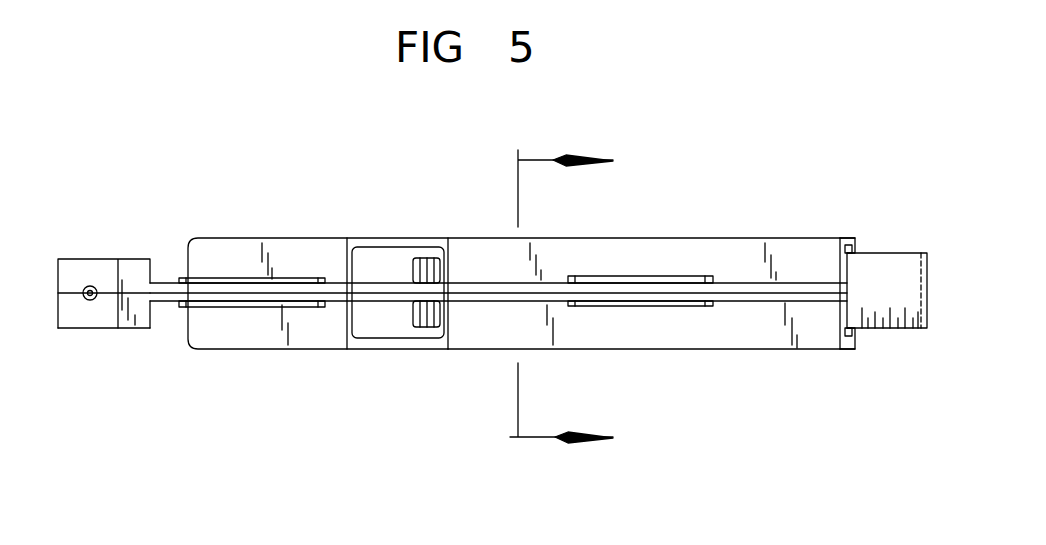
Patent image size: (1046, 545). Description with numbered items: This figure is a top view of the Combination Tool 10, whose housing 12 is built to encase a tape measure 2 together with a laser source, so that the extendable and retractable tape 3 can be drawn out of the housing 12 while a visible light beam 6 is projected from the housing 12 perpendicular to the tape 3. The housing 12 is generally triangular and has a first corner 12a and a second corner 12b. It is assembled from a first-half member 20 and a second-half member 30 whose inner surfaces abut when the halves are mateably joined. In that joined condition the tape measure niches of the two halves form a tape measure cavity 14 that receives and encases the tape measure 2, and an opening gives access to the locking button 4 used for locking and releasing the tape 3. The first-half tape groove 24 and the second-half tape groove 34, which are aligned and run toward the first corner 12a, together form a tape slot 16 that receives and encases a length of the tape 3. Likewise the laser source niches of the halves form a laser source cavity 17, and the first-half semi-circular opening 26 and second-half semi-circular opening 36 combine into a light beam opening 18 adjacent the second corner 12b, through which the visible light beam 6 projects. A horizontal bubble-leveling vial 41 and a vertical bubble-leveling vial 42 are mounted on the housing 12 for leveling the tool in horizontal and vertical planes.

The Combination Tool 10 is at (313, 387).
The housing 12 is at (485, 351).
The first corner 12a is at (814, 243).
The second corner 12b is at (58, 259).
The tape measure cavity 14 is at (283, 234).
The tape measure 2 is at (360, 262).
The extendable and retractable tape 3 is at (890, 275).
The locking button 4 is at (427, 258).
The visible light beam 6 is at (550, 303).
The tape slot 16 is at (839, 323).
The laser source cavity 17 is at (96, 336).
The light beam opening 18 is at (72, 305).
The first-half member 20 is at (695, 351).
The first-half tape groove 24 is at (852, 325).
The first-half semi-circular opening 26 is at (94, 302).
The second-half member 30 is at (546, 236).
The second-half tape groove 34 is at (855, 252).
The second-half semi-circular opening 36 is at (93, 287).
The horizontal bubble-leveling vial 41 is at (207, 280).
The vertical bubble-leveling vial 42 is at (662, 275).